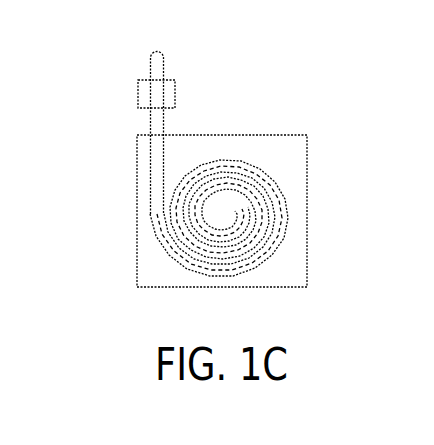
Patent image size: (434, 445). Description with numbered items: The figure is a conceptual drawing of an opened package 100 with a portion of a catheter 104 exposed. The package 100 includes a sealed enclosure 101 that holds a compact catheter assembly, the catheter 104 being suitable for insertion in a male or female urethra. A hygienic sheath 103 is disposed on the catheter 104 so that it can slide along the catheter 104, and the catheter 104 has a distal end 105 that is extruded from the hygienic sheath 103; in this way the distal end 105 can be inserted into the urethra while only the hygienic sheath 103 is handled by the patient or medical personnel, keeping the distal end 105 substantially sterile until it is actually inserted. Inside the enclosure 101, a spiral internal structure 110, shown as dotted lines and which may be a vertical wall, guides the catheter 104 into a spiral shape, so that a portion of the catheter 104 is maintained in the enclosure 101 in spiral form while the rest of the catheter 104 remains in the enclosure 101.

The package 100 is at (111, 225).
The sealed enclosure 101 is at (284, 144).
The hygienic sheath 103 is at (137, 93).
The catheter 104 is at (207, 281).
The distal end 105 is at (185, 50).
The spiral internal structure 110 is at (178, 165).